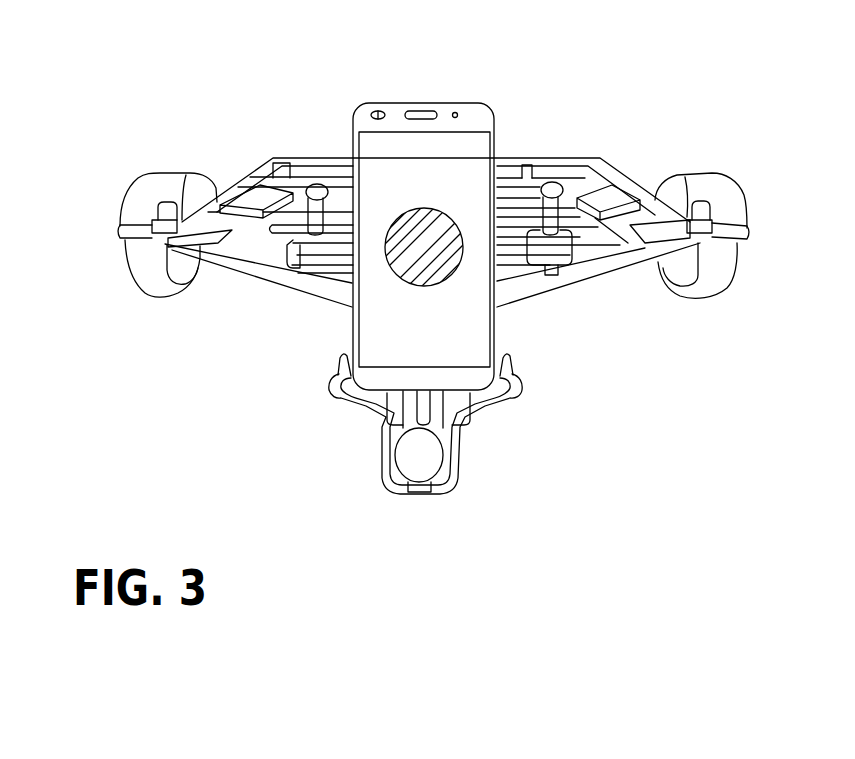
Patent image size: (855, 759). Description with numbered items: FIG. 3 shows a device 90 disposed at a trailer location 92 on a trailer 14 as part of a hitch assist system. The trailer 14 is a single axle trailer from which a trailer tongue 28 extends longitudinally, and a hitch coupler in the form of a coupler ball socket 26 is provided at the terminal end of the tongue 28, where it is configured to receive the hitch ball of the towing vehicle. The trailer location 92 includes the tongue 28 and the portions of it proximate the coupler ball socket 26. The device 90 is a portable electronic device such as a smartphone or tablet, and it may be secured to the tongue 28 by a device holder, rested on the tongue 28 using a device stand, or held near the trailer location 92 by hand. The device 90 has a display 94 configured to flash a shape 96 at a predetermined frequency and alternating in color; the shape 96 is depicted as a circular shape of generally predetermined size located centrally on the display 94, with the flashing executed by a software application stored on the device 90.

The trailer 14 is at (630, 165).
The device 90 is at (385, 200).
The display 94 is at (385, 152).
The shape 96 is at (405, 285).
The trailer location 92 is at (467, 438).
The trailer tongue 28 is at (450, 403).
The coupler ball socket 26 is at (405, 453).